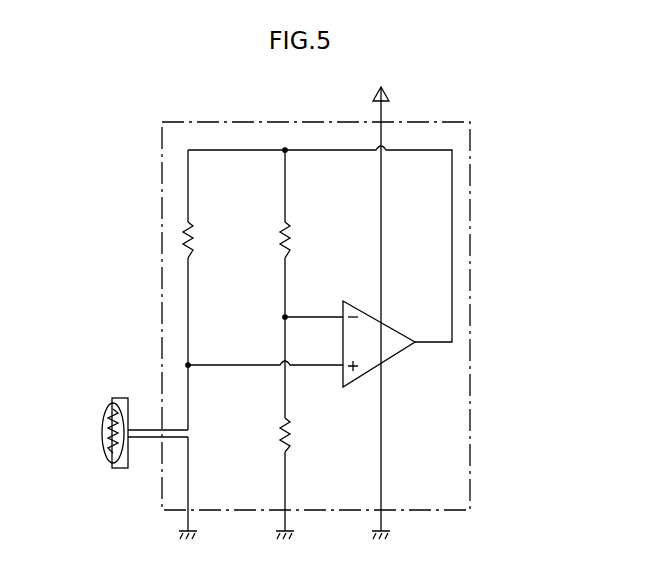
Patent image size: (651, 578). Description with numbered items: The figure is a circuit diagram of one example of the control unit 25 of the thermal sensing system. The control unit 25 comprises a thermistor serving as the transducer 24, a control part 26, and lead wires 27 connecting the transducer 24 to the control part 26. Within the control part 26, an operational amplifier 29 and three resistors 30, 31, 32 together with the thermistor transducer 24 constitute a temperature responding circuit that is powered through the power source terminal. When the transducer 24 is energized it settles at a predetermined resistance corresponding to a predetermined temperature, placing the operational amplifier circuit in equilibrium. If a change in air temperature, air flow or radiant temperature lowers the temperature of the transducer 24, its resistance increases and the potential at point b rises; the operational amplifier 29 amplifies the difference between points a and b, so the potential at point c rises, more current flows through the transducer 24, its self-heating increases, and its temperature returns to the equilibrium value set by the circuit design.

The transducer 24 is at (103, 432).
The control unit 25 is at (502, 123).
The control part 26 is at (178, 121).
The lead wires 27 is at (152, 440).
The operational amplifier 29 is at (392, 354).
The resistor 30 is at (183, 238).
The resistor 31 is at (288, 236).
The resistor 32 is at (291, 439).